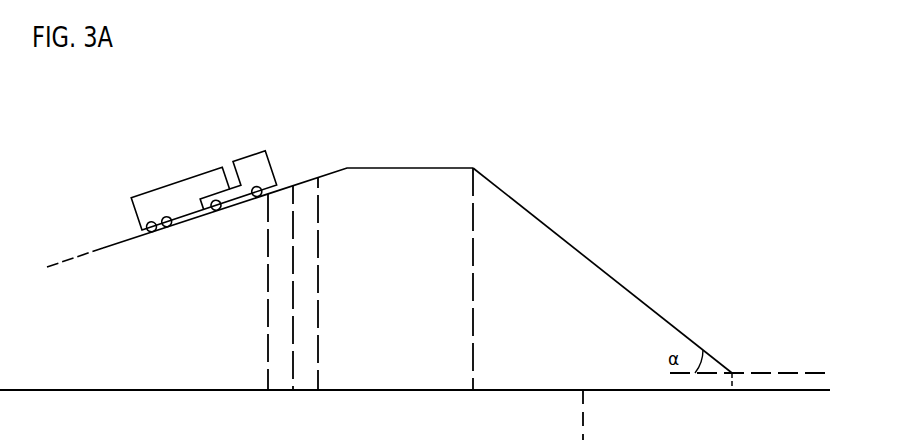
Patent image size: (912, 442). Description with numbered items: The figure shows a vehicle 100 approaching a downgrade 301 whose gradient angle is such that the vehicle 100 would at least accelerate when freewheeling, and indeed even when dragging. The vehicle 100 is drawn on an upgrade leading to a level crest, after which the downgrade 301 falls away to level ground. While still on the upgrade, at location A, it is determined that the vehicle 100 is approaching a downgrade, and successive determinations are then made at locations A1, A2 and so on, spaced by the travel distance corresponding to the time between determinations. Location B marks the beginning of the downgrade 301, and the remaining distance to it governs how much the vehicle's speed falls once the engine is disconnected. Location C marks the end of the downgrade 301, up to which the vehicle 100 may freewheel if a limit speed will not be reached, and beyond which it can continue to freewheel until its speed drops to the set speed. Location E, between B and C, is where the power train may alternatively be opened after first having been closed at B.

The vehicle 100 is at (185, 162).
The downgrade 301 is at (638, 285).
The location A is at (269, 307).
The location A1 is at (298, 305).
The location A2 is at (323, 301).
The location B is at (474, 294).
The location C is at (733, 397).
The location E is at (584, 398).